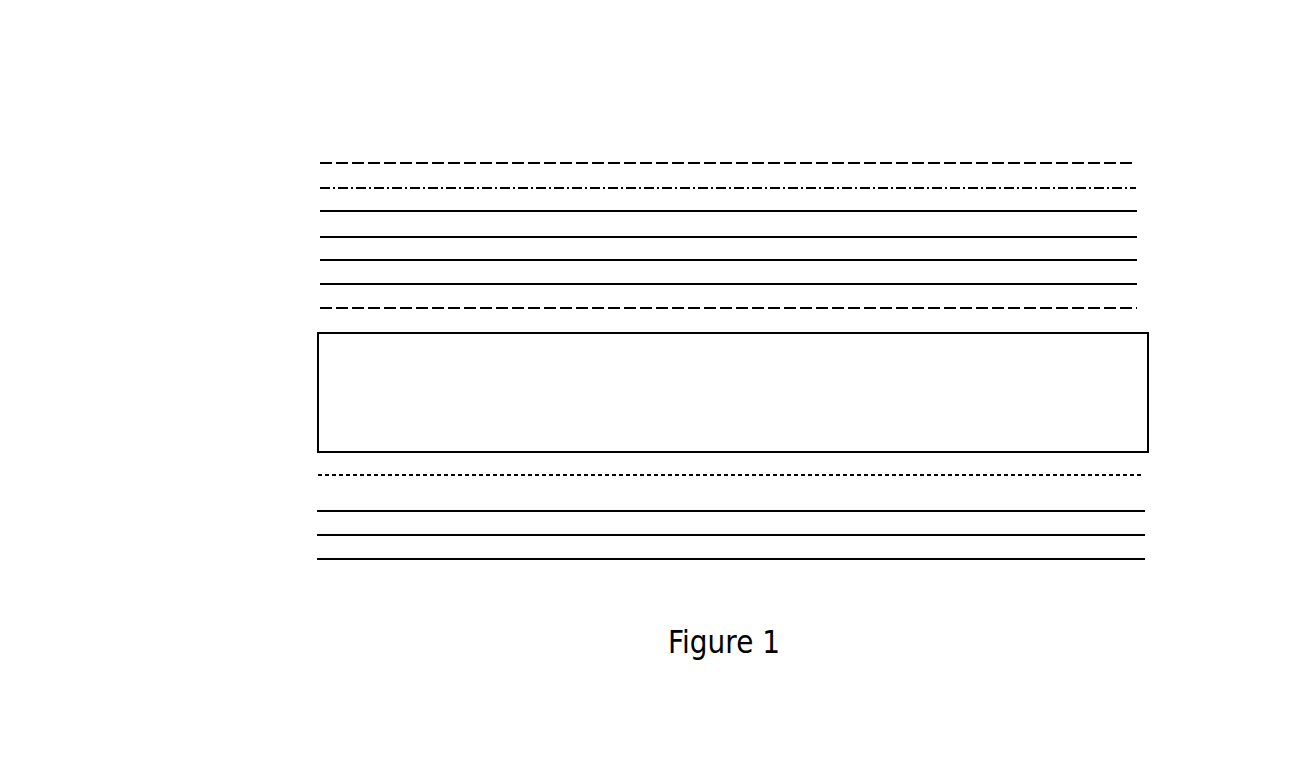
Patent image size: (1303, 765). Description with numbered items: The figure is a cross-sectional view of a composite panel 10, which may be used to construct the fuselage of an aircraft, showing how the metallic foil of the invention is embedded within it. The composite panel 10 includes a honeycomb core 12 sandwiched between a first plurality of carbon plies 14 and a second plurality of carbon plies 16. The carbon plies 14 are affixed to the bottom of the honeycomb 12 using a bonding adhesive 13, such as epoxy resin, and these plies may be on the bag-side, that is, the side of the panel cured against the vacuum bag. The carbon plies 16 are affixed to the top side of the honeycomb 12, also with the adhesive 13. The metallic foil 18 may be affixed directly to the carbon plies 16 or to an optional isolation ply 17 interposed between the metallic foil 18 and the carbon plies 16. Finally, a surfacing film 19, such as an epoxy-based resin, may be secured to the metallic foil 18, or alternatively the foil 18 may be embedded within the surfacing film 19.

The composite panel 10 is at (735, 293).
The honeycomb core 12 is at (1150, 395).
The bonding adhesive 13 is at (318, 308).
The first plurality of carbon plies 14 is at (1148, 558).
The second plurality of carbon plies 16 is at (1139, 237).
The isolation ply 17 is at (317, 210).
The metallic foil 18 is at (1135, 189).
The surfacing film 19 is at (487, 175).